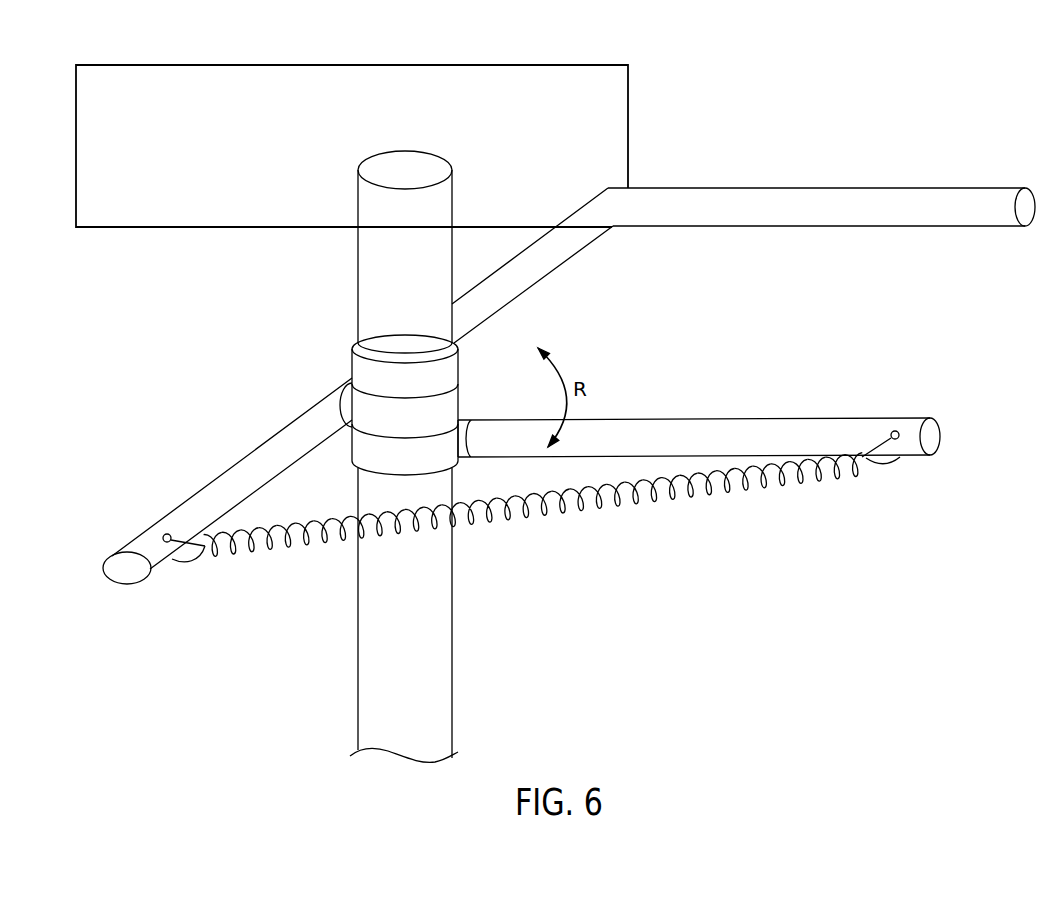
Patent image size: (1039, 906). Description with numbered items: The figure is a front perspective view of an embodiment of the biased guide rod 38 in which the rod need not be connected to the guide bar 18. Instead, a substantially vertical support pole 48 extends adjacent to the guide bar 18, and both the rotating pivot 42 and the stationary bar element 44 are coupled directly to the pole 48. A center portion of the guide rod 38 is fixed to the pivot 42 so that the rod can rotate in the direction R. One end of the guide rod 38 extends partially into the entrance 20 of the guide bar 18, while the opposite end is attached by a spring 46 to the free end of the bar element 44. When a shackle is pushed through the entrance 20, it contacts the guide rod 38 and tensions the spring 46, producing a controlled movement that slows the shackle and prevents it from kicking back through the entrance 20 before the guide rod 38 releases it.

The guide bar 18 is at (337, 160).
The entrance 20 is at (772, 120).
The biased guide rod 38 is at (532, 272).
The pivot 42 is at (447, 410).
The bar element 44 is at (767, 427).
The spring 46 is at (583, 508).
The support pole 48 is at (372, 666).